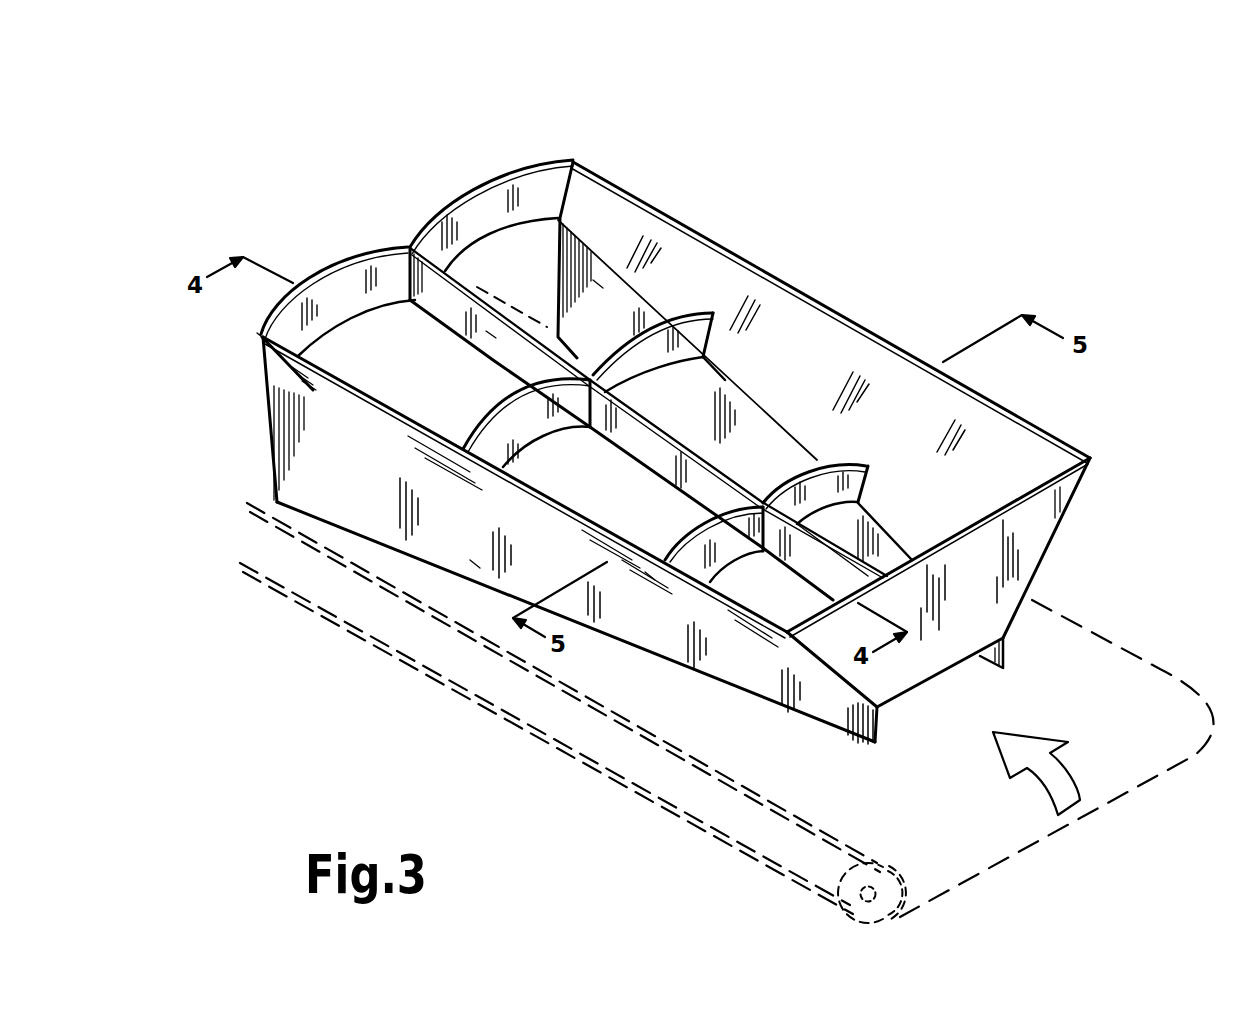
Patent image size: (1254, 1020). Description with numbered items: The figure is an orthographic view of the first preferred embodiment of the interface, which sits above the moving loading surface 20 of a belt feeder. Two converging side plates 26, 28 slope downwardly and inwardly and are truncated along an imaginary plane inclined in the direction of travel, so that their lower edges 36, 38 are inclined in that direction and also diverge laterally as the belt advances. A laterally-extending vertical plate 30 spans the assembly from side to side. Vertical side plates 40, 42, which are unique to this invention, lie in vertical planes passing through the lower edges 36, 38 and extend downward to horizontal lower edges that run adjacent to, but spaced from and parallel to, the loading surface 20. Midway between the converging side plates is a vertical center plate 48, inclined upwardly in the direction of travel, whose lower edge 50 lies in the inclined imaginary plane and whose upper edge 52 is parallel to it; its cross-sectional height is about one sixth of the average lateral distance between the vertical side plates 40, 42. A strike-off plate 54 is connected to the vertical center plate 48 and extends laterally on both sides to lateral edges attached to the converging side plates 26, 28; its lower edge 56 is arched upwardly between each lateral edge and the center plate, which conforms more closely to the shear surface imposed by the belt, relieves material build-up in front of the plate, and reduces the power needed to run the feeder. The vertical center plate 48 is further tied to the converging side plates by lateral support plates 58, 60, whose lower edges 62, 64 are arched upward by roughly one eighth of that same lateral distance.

The loading surface 20 is at (807, 763).
The converging side plate 26 is at (893, 407).
The converging side plate 28 is at (697, 603).
The laterally-extending vertical plate 30 is at (1027, 553).
The lower edge of converging side plate 36 is at (770, 415).
The lower edge of converging side plate 38 is at (650, 577).
The vertical side plate 40 is at (600, 283).
The vertical side plate 42 is at (475, 563).
The vertical center plate 48 is at (492, 333).
The lower edge of vertical center plate 50 is at (260, 345).
The upper edge of vertical center plate 52 is at (473, 287).
The strike-off plate 54 is at (353, 280).
The lower edge of strike-off plate 56 is at (547, 233).
The lateral support plate 58 is at (697, 322).
The lateral support plate 60 is at (866, 488).
The lower edge of lateral support plate 62 is at (715, 385).
The lower edge of lateral support plate 64 is at (855, 521).